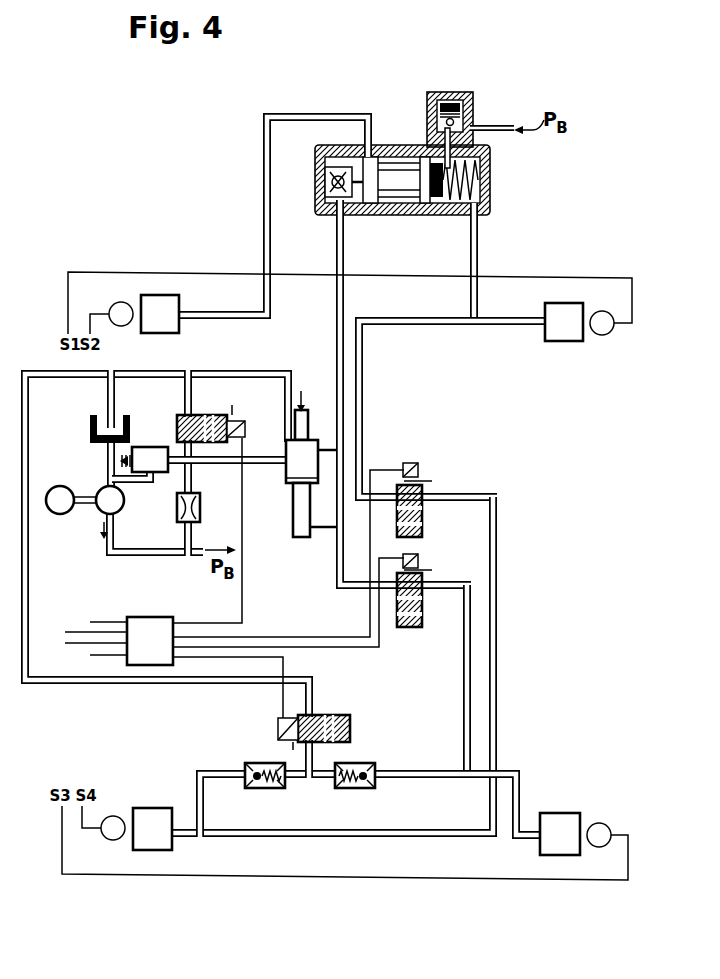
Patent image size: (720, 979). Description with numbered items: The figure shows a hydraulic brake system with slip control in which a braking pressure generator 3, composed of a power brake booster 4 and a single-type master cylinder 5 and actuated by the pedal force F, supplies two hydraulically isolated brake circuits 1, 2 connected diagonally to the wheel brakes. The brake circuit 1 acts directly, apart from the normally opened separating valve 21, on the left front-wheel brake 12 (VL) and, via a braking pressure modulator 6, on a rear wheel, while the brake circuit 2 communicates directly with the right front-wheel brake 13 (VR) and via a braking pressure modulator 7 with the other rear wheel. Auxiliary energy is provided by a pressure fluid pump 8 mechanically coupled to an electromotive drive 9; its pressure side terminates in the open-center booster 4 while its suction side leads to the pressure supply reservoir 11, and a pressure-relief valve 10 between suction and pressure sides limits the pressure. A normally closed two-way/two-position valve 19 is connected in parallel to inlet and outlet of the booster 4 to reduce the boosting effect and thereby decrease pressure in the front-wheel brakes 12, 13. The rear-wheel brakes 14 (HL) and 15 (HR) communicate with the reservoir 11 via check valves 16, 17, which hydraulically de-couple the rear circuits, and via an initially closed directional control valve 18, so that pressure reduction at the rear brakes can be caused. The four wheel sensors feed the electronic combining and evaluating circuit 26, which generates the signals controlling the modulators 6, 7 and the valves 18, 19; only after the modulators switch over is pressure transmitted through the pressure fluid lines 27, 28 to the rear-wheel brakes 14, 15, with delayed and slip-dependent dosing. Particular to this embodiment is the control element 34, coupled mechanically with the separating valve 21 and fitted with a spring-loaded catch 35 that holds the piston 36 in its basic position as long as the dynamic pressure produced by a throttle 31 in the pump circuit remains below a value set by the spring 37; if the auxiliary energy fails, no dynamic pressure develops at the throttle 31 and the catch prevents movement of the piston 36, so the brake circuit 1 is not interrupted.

The brake circuit 1 is at (336, 397).
The brake circuit 2 is at (363, 397).
The braking pressure generator 3 is at (286, 448).
The power brake booster 4 is at (285, 481).
The master cylinder 5 is at (293, 524).
The braking pressure modulator 6 is at (423, 602).
The braking pressure modulator 7 is at (423, 512).
The pressure fluid pump 8 is at (99, 489).
The electromotive drive 9 is at (54, 488).
The pressure-relief valve 10 is at (150, 447).
The pressure supply reservoir 11 is at (90, 431).
The front-wheel brake 12 is at (159, 295).
The front-wheel brake 13 is at (565, 303).
The rear-wheel brake 14 is at (152, 851).
The rear-wheel brake 15 is at (562, 856).
The check valve 16 is at (265, 790).
The check valve 17 is at (355, 790).
The two-way/two-position directional control valve 18 is at (351, 725).
The two-way/two-position directional control valve 19 is at (199, 415).
The separating valve 21 is at (324, 216).
The electronic combining and evaluating circuit 26 is at (150, 666).
The pressure fluid line 27 is at (463, 722).
The pressure fluid line 28 is at (498, 722).
The throttle 31 is at (177, 512).
The control element 34 is at (408, 136).
The spring-loaded catch 35 is at (470, 118).
The piston 36 is at (381, 150).
The spring 37 is at (440, 92).